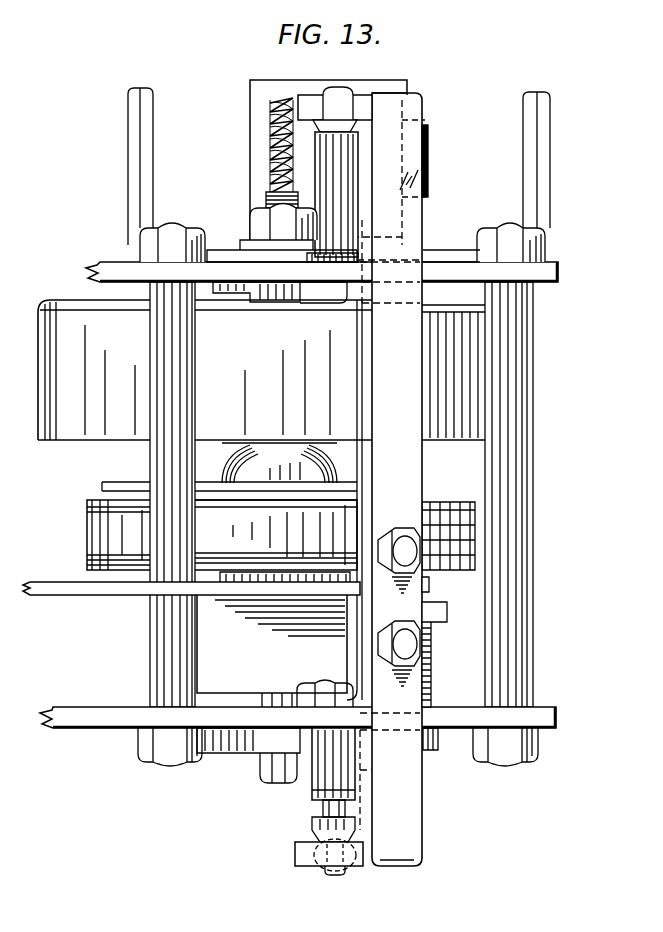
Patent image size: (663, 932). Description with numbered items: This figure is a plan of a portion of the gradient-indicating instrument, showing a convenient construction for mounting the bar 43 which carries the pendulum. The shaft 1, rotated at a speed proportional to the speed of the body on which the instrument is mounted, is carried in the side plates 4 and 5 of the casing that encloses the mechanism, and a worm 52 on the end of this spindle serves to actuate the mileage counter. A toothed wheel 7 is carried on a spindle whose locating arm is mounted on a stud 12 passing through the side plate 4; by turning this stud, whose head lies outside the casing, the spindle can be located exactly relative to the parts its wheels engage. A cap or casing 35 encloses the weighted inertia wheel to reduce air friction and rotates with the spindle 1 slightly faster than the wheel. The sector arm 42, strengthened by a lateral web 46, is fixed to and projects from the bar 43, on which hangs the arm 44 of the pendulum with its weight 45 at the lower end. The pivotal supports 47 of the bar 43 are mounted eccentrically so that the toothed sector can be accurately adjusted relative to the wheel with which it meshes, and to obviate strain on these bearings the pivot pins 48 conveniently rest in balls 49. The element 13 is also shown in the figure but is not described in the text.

The shaft 1 is at (268, 196).
The side plate 4 is at (88, 716).
The side plate 5 is at (115, 273).
The toothed wheel 7 is at (430, 583).
The stud 12 is at (431, 650).
The housing block 13 is at (103, 527).
The cap or casing 35 is at (261, 370).
The sector arm 42 is at (83, 588).
The bar 43 is at (376, 479).
The pendulum arm 44 is at (410, 190).
The weight 45 is at (316, 88).
The lateral web 46 is at (223, 683).
The pivotal supports 47 is at (342, 218).
The pivot pins 48 is at (333, 106).
The balls 49 is at (349, 93).
The worm 52 is at (270, 130).